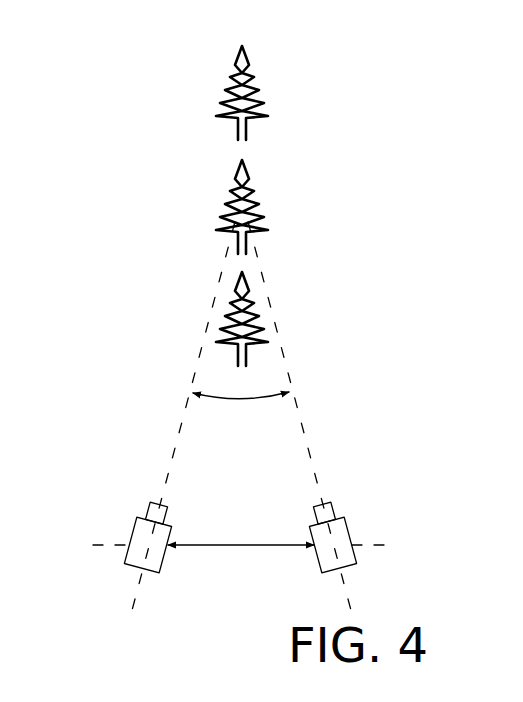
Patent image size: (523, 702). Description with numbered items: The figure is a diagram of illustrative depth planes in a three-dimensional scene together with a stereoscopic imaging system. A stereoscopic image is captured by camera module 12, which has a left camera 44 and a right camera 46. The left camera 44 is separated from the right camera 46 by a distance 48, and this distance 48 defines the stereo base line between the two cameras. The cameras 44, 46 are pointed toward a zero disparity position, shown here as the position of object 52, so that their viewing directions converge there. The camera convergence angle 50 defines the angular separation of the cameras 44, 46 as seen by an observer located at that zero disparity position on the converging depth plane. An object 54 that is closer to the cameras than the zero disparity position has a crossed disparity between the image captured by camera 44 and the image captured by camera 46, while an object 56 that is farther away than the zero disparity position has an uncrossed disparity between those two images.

The camera module 12 is at (102, 594).
The left camera 44 is at (143, 533).
The right camera 46 is at (340, 533).
The distance 48 is at (248, 550).
The camera convergence angle 50 is at (248, 400).
The object 52 is at (279, 183).
The object 54 is at (279, 295).
The object 56 is at (280, 70).